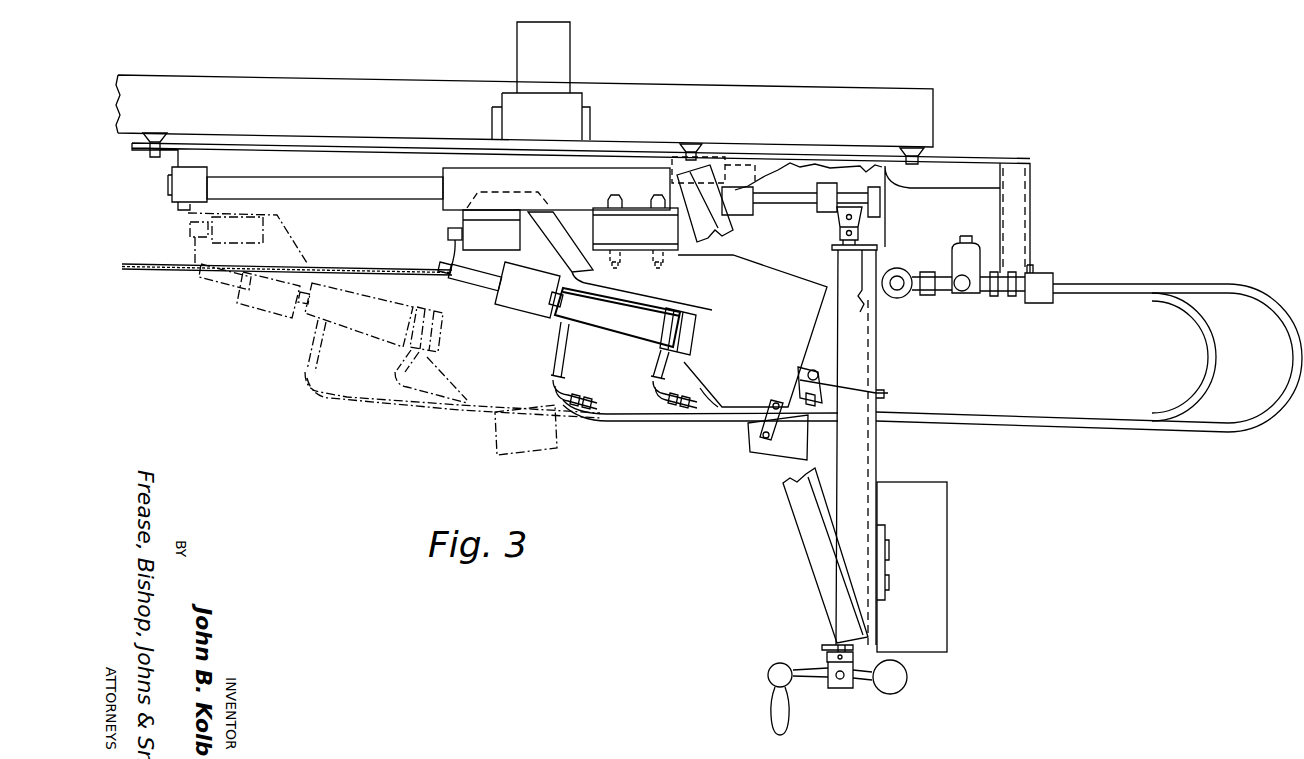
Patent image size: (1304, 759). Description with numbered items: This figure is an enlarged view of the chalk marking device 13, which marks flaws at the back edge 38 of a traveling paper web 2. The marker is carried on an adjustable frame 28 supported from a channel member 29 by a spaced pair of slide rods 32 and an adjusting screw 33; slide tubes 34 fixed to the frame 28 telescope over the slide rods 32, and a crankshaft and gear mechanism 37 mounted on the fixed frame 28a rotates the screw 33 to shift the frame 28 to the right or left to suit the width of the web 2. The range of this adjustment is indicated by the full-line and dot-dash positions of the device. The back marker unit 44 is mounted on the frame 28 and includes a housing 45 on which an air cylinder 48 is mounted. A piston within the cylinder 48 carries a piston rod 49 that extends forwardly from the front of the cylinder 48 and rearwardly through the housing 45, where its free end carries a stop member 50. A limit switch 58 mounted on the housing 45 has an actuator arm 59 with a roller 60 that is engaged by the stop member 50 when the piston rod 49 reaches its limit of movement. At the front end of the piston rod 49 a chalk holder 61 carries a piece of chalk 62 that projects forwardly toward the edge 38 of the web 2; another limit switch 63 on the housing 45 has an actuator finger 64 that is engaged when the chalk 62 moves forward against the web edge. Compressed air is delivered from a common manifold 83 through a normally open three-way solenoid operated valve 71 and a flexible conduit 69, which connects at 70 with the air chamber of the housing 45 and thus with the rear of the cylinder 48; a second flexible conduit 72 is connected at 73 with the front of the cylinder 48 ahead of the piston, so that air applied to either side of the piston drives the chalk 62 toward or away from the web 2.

The paper web 2 is at (333, 262).
The chalk marking device 13 is at (421, 427).
The frame 28 is at (633, 208).
The fixed frame 28a is at (800, 513).
The channel member 29 is at (925, 106).
The slide rods 32 is at (288, 184).
The adjusting screw 33 is at (800, 196).
The slide tubes 34 is at (455, 172).
The crankshaft and gear mechanism 37 is at (842, 690).
The back edge of paper web 38 is at (441, 274).
The back marker unit 44 is at (736, 392).
The housing 45 is at (787, 282).
The air cylinder 48 is at (630, 322).
The piston rod 49 is at (553, 326).
The stop member 50 is at (866, 402).
The limit switch 58 is at (808, 428).
The actuator arm 59 is at (800, 380).
The roller 60 is at (815, 371).
The chalk holder 61 is at (527, 298).
The chalk 62 is at (483, 280).
The limit switch 63 is at (510, 232).
The actuator finger 64 is at (446, 245).
The flexible conduit 69 is at (1205, 434).
The connection of flexible conduit to air chamber 70 is at (672, 310).
The three-way solenoid operated valve 71 is at (957, 295).
The flexible conduit 72 is at (635, 416).
The connection of flexible conduit to cylinder front 73 is at (573, 327).
The common manifold 83 is at (903, 270).